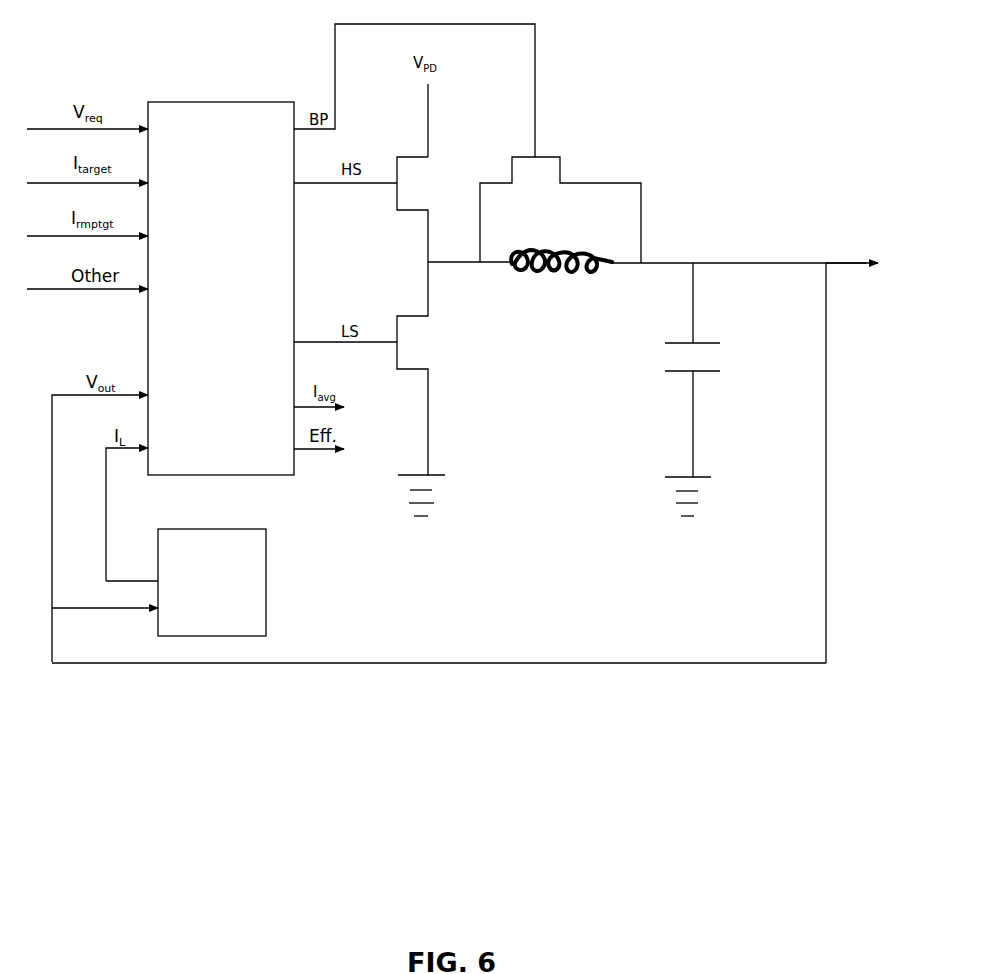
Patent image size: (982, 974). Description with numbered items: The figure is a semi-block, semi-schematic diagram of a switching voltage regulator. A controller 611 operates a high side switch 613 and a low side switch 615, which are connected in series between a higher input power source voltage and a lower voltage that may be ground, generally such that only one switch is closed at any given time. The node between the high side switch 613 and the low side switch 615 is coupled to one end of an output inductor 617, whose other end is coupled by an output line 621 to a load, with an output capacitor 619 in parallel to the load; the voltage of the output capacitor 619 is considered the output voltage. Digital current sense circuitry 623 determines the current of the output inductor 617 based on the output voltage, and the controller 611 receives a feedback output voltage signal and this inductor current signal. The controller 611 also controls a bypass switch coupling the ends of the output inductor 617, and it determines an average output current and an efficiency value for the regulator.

The controller 611 is at (223, 100).
The high side switch 613 is at (413, 157).
The low side switch 615 is at (413, 315).
The output inductor 617 is at (560, 270).
The output capacitor 619 is at (678, 372).
The output line 621 is at (851, 263).
The digital current sense circuitry 623 is at (563, 170).